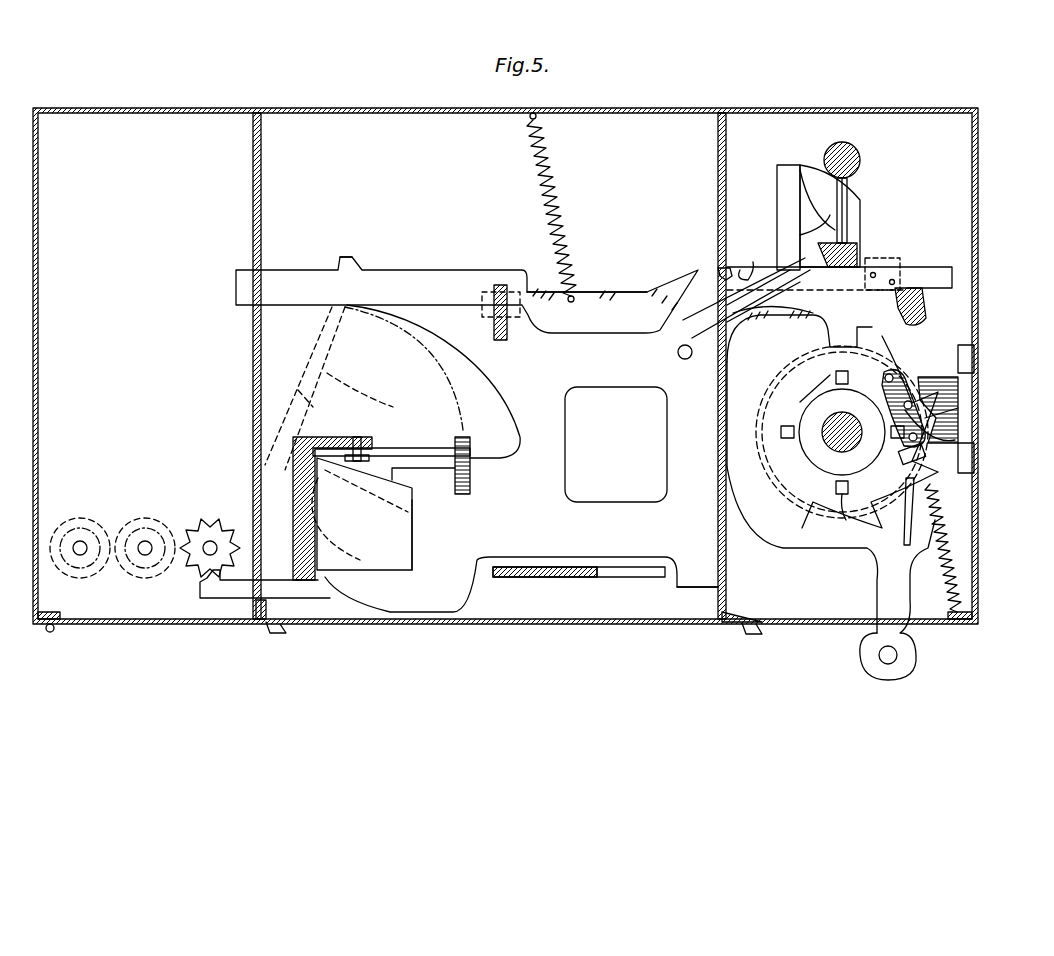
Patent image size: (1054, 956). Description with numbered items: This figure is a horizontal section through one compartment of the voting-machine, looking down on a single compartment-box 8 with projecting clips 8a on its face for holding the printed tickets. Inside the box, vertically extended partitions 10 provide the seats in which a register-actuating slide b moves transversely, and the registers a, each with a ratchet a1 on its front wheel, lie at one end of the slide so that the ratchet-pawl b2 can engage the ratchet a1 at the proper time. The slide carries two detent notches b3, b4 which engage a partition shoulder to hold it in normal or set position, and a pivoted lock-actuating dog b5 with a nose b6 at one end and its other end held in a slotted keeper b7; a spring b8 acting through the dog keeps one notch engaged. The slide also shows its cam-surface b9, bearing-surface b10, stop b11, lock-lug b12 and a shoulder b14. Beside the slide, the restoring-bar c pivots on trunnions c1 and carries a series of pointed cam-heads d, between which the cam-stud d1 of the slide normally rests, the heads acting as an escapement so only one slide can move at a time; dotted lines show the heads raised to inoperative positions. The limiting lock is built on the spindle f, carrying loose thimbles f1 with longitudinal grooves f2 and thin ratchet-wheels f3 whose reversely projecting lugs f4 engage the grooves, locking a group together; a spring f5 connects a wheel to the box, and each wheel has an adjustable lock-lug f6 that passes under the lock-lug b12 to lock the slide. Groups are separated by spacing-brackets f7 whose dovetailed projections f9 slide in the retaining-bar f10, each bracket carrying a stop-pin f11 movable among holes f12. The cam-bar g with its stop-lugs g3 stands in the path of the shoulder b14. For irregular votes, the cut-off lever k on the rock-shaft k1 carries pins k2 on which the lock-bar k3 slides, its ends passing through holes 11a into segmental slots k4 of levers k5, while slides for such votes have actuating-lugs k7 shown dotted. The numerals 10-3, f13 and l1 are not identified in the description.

The compartment-box 8 is at (778, 109).
The projecting clips 8a is at (272, 636).
The partitions 10 is at (262, 205).
The partition stop 10-3 is at (722, 268).
The holes 11a is at (790, 180).
The register-actuating slide b is at (557, 432).
The ratchet-pawl b2 is at (236, 602).
The notch b3 is at (812, 262).
The notch b4 is at (748, 262).
The lock-actuating dog b5 is at (627, 300).
The nose b6 is at (910, 320).
The slotted keeper b7 is at (498, 285).
The spring b8 is at (552, 172).
The cam-surface b9 is at (325, 578).
The bearing-surface b10 is at (414, 534).
The stop b11 is at (345, 256).
The lock-lug b12 is at (835, 322).
The shoulder b14 is at (678, 578).
The registers a is at (210, 540).
The ratchet a1 is at (213, 535).
The restoring-bar c is at (320, 520).
The trunnions c1 is at (298, 465).
The cam-heads d is at (398, 448).
The cam-stud d1 is at (472, 455).
The cam-bar g is at (552, 578).
The stop-lugs g3 is at (655, 578).
The cut-off lever k is at (805, 213).
The rock-shaft k1 is at (856, 150).
The pins k2 is at (847, 210).
The lock-bar k3 is at (856, 250).
The segmental slots k4 is at (745, 298).
The levers k5 is at (691, 343).
The actuating-lugs k7 is at (880, 262).
The spindle f is at (808, 452).
The thimbles f1 is at (835, 440).
The longitudinal grooves f2 is at (832, 490).
The ratchet-wheels f3 is at (790, 522).
The lugs f4 is at (796, 432).
The spring f5 is at (946, 556).
The lock-lug f6 is at (908, 545).
The spacing-brackets f7 is at (956, 420).
The dovetailed projections f9 is at (960, 380).
The retaining-bar f10 is at (963, 365).
The stop-pin f11 is at (903, 468).
The holes f12 is at (910, 400).
The pin f13 is at (807, 388).
The arm l1 is at (900, 656).